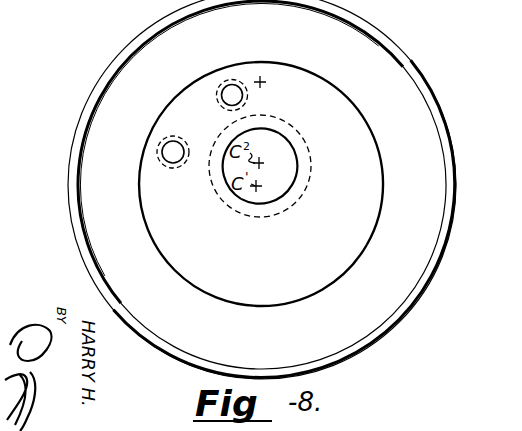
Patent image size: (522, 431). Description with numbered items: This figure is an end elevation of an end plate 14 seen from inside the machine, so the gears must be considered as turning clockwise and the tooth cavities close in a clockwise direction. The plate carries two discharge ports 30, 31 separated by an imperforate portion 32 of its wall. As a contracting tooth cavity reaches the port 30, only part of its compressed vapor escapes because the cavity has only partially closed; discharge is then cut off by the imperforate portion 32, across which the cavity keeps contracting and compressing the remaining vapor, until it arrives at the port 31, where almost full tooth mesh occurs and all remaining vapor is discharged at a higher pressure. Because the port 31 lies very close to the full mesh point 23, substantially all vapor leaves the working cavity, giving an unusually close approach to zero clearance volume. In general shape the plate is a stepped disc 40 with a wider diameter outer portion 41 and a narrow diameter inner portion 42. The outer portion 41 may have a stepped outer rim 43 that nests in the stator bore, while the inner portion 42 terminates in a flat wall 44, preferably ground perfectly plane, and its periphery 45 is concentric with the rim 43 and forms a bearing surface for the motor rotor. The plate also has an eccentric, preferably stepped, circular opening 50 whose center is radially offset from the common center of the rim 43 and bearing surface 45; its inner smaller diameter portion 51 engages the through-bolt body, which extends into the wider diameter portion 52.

The end plate 14 is at (399, 88).
The full mesh point 23 is at (263, 80).
The discharge port 30 is at (161, 152).
The discharge port 31 is at (221, 91).
The imperforate portion 32 is at (207, 130).
The stepped disc 40 is at (424, 145).
The outer portion 41 is at (90, 212).
The inner portion 42 is at (286, 275).
The stepped outer rim 43 is at (437, 272).
The flat wall 44 is at (233, 257).
The periphery 45 is at (164, 258).
The circular opening 50 is at (298, 180).
The inner smaller diameter portion 51 is at (285, 186).
The wider diameter portion 52 is at (303, 137).